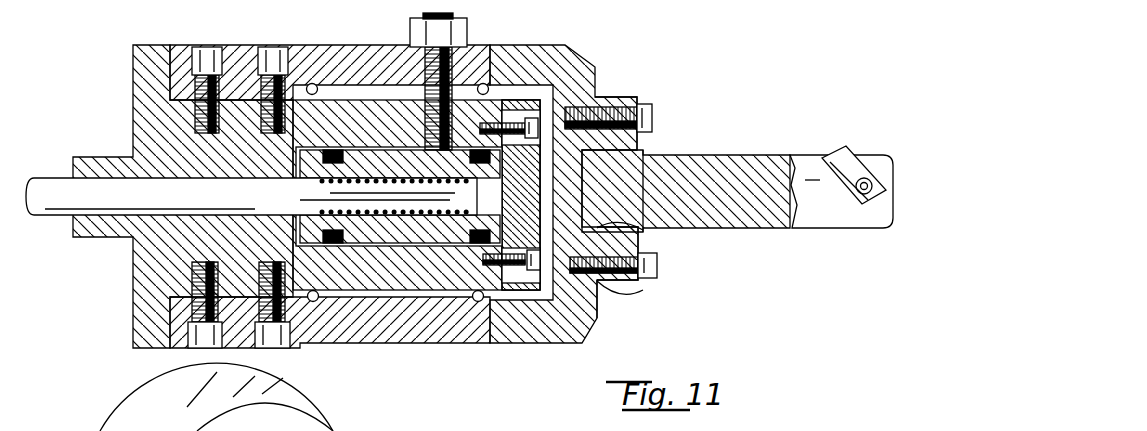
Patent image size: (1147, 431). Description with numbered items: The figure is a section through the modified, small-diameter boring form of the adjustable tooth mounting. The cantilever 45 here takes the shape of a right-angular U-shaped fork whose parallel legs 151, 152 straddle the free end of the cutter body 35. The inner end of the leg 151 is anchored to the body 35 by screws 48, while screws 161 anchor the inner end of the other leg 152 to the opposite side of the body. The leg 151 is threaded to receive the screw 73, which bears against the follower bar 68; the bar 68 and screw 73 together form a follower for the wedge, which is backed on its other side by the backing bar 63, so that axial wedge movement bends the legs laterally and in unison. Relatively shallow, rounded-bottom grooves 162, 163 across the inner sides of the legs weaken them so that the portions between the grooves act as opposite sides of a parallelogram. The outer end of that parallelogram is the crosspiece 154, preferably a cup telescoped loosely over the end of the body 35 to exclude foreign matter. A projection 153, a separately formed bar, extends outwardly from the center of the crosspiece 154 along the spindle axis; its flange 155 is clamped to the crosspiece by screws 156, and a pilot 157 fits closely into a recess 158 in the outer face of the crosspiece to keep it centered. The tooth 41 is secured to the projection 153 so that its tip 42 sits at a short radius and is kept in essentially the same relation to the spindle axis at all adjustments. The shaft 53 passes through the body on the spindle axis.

The cutter body 35 is at (153, 263).
The tooth 41 is at (841, 167).
The tooth tip 42 is at (870, 136).
The cantilever 45 is at (592, 184).
The screws 48 is at (248, 48).
The shaft 53 is at (77, 180).
The backing bar 63 is at (352, 240).
The follower bar 68 is at (396, 130).
The screw 73 is at (460, 43).
The leg 151 is at (335, 53).
The leg 152 is at (380, 343).
The projection 153 is at (686, 180).
The crosspiece 154 is at (593, 292).
The flange 155 is at (640, 288).
The screws 156 is at (627, 100).
The pilot 157 is at (590, 163).
The recess 158 is at (640, 229).
The screws 161 is at (267, 262).
The groove 162 is at (313, 84).
The groove 163 is at (483, 84).